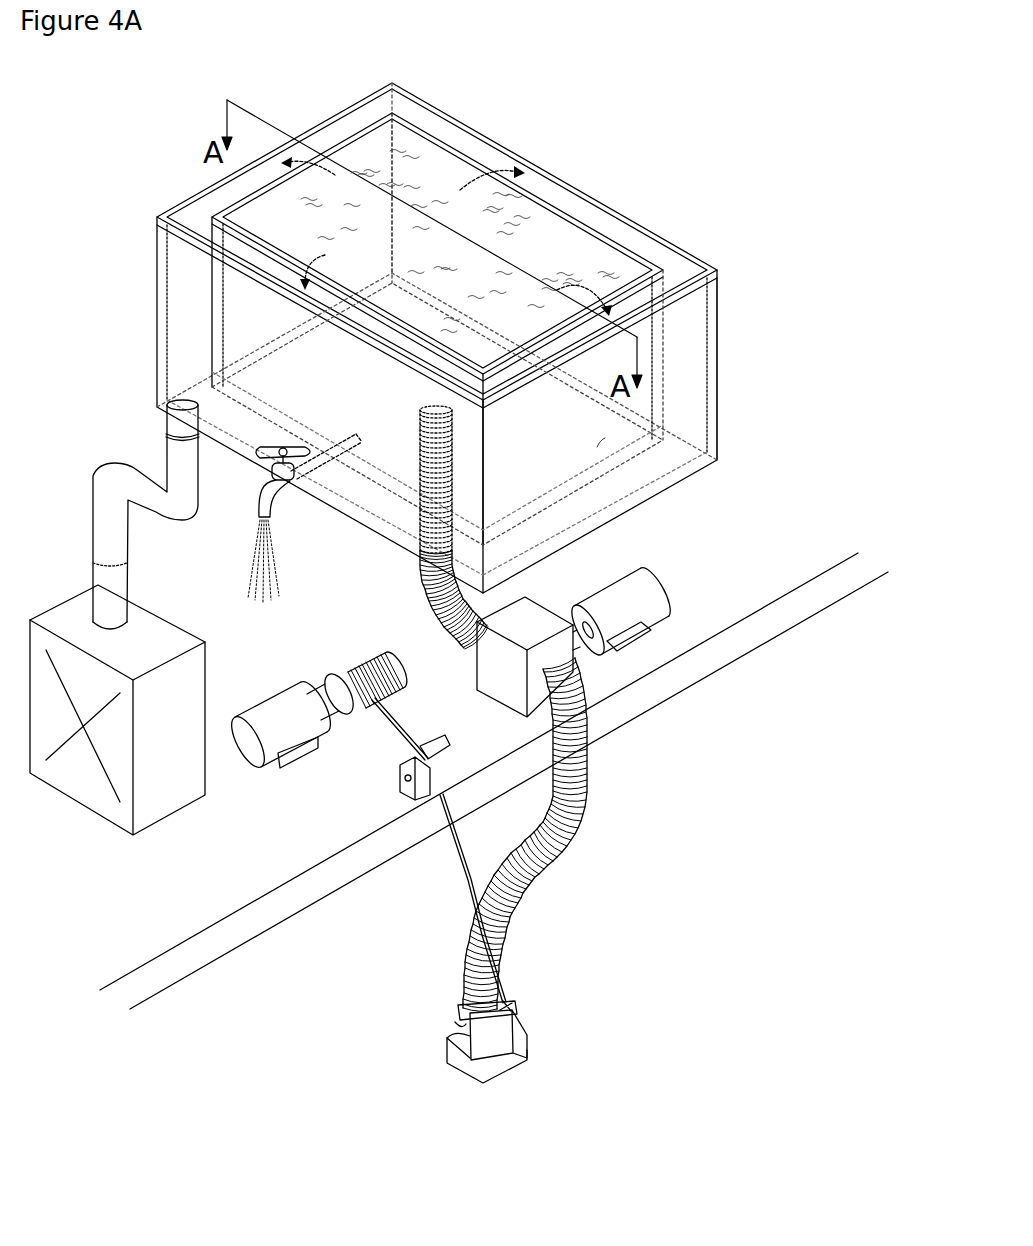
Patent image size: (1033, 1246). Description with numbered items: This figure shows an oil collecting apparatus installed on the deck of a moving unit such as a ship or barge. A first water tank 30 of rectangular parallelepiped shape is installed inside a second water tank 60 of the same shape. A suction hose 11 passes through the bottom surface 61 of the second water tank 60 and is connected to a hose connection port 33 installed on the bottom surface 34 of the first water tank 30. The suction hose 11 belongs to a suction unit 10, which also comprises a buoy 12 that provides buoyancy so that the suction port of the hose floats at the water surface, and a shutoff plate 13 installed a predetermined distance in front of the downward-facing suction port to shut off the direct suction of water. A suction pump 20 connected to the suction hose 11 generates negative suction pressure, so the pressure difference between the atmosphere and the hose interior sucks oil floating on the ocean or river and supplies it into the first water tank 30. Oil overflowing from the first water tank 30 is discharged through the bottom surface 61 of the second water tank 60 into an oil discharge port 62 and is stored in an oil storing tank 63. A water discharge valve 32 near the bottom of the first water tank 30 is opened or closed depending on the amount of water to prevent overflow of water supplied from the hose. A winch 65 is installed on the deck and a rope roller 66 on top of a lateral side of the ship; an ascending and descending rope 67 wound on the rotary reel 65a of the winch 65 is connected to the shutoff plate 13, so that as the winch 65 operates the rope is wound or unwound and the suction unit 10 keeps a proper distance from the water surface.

The suction unit 10 is at (461, 1050).
The suction hose 11 is at (590, 687).
The buoy 12 is at (493, 1033).
The shutoff plate 13 is at (507, 1057).
The suction pump 20 is at (572, 589).
The first water tank 30 is at (543, 203).
The water discharge valve 32 is at (257, 512).
The hose connection port 33 is at (425, 410).
The bottom surface 34 is at (597, 447).
The second water tank 60 is at (677, 243).
The bottom surface 61 is at (640, 481).
The oil discharge port 62 is at (168, 403).
The oil storing tank 63 is at (193, 771).
The winch 65 is at (293, 695).
The rotary reel 65a is at (375, 657).
The rope roller 66 is at (397, 758).
The ascending and descending rope 67 is at (466, 880).